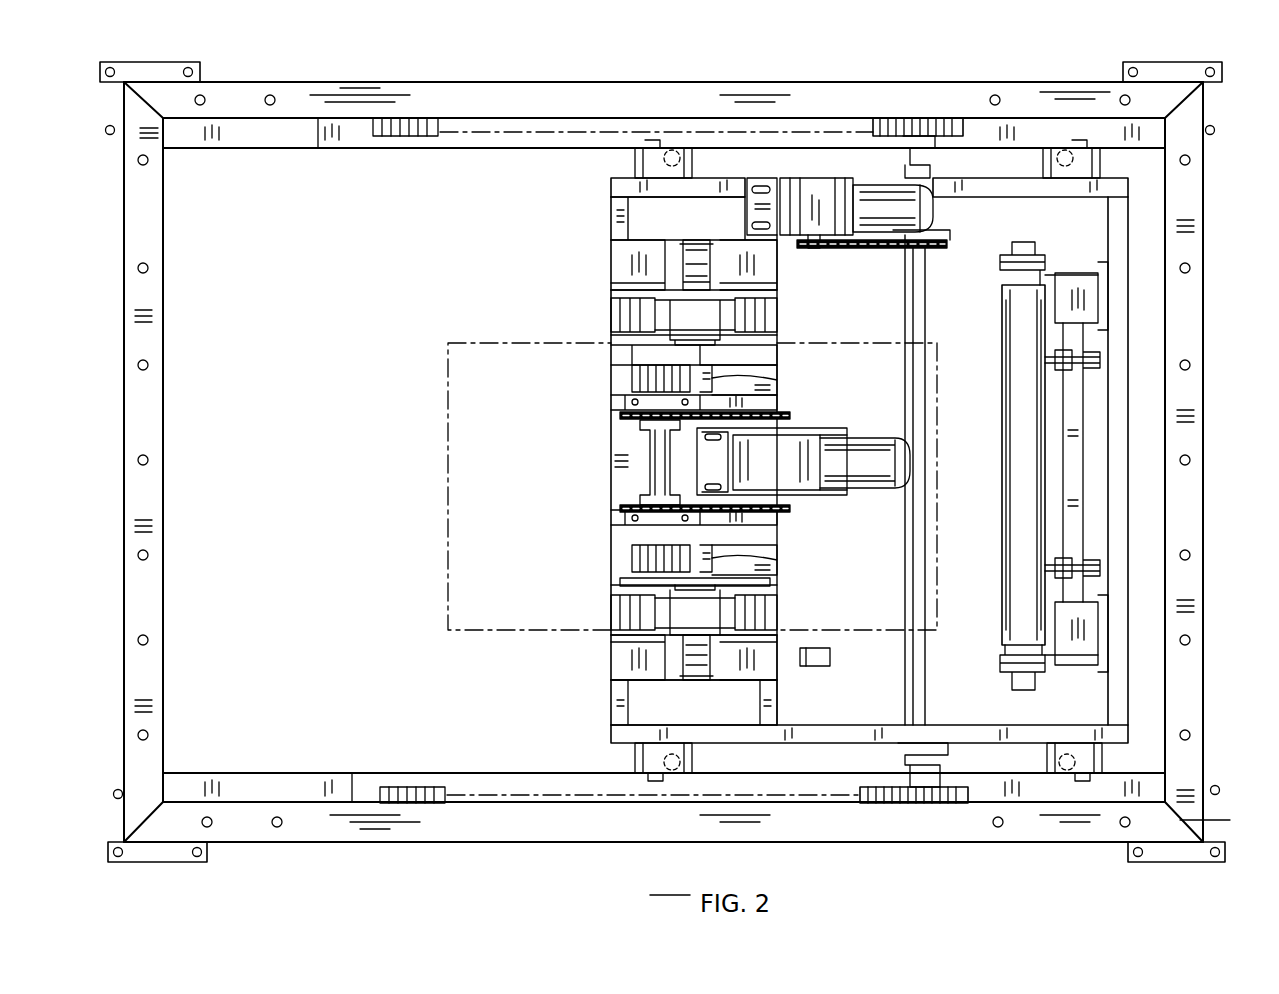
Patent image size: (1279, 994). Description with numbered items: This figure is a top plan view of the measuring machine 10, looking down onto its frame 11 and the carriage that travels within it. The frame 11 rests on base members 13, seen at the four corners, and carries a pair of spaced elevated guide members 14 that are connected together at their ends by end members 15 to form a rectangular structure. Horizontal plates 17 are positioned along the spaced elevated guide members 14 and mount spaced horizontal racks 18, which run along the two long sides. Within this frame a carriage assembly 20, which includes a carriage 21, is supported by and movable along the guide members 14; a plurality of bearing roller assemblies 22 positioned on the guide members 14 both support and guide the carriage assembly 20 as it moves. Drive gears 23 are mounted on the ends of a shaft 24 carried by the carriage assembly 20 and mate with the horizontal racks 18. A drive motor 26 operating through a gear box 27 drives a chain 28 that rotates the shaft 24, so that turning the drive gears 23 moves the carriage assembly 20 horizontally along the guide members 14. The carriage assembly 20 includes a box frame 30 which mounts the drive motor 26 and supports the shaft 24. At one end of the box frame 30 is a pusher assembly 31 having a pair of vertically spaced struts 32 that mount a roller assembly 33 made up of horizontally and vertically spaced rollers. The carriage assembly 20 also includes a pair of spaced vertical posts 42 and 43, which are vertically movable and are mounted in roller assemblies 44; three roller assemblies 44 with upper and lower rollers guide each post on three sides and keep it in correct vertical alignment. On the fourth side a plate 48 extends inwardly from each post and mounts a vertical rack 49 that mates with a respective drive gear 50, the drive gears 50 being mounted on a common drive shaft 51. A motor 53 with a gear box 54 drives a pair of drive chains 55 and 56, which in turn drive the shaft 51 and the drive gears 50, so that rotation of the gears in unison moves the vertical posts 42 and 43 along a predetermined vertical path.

The measuring machine 10 is at (1205, 360).
The frame 11 is at (124, 468).
The base members 13 is at (102, 130).
The spaced elevated guide members 14 is at (318, 148).
The end members 15 is at (163, 462).
The horizontal plates 17 is at (238, 148).
The spaced horizontal racks 18 is at (430, 148).
The carriage assembly 20 is at (800, 743).
The carriage 21 is at (611, 250).
The bearing roller assemblies 22 is at (668, 160).
The drive gears 23 is at (930, 118).
The shaft 24 is at (930, 330).
The drive motor 26 is at (905, 220).
The gear box 27 is at (815, 178).
The chain 28 is at (845, 248).
The box frame 30 is at (611, 710).
The pusher assembly 31 is at (1085, 480).
The struts 32 is at (1072, 280).
The roller assembly 33 is at (1000, 370).
The vertical post 42 is at (660, 583).
The vertical post 43 is at (615, 348).
The roller assemblies 44 is at (688, 243).
The plate 48 is at (745, 378).
The vertical rack 49 is at (760, 370).
The drive gears 50 is at (632, 378).
The drive shaft 51 is at (640, 480).
The motor 53 is at (880, 466).
The gear box 54 is at (812, 488).
The drive chain 55 is at (790, 510).
The drive chain 56 is at (790, 416).